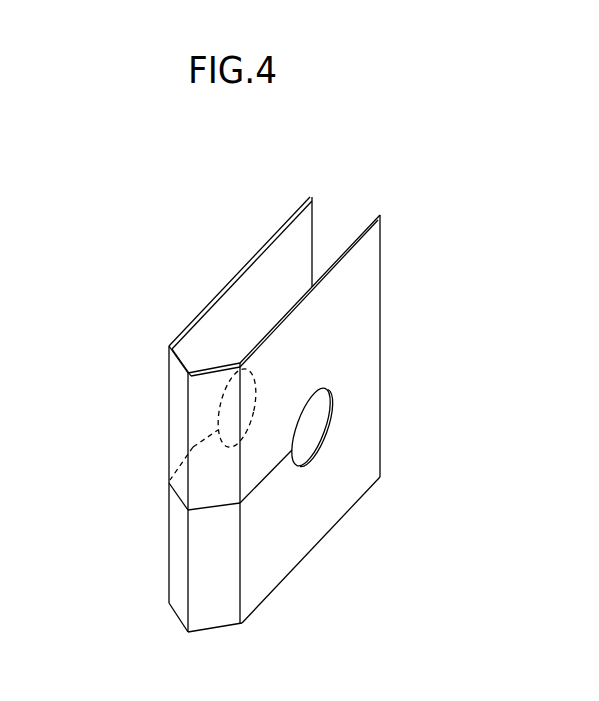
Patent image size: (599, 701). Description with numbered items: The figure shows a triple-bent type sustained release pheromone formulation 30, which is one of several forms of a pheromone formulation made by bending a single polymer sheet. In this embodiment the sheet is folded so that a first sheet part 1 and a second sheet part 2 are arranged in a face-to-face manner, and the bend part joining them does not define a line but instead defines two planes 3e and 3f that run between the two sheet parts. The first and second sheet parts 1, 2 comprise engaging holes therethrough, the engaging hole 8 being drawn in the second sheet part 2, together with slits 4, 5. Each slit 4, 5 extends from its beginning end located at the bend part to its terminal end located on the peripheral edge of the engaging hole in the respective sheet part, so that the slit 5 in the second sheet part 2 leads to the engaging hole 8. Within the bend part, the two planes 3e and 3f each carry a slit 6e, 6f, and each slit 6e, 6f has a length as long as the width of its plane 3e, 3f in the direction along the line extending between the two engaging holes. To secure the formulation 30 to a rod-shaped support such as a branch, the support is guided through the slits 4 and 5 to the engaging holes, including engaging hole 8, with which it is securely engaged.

The triple-bent type sustained release pheromone formulation 30 is at (200, 235).
The first sheet part 1 is at (288, 233).
The second sheet part 2 is at (365, 287).
The plane of bend part 3e is at (178, 383).
The plane of bend part 3f is at (208, 392).
The slit 4 is at (193, 447).
The slit 5 is at (268, 477).
The slit 6e is at (178, 505).
The slit 6f is at (212, 508).
The engaging hole 8 is at (322, 440).